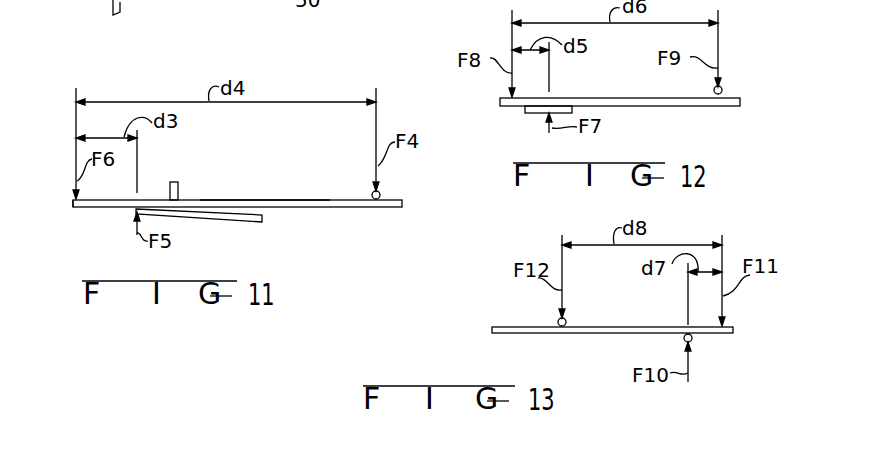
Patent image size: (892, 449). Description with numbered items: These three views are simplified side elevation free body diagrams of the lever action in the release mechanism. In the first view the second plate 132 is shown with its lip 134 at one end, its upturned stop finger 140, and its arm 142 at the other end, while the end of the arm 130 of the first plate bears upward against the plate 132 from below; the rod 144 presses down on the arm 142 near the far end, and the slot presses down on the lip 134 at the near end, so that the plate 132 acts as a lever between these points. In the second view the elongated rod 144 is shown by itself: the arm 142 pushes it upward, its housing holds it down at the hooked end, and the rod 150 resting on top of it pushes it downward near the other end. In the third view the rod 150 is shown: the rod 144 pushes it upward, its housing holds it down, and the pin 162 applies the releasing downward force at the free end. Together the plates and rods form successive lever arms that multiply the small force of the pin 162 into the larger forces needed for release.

In FIG. 11, the arm 130 is at (199, 223).
In FIG. 11, the second plate 132 is at (242, 196).
In FIG. 11, the lip 134 is at (71, 208).
In FIG. 11, the stop finger 140 is at (172, 182).
In FIG. 11, the arm 142 is at (350, 208).
In FIG. 12, the arm 142 is at (532, 113).
In FIG. 11, the elongated rod 144 is at (381, 192).
In FIG. 12, the elongated rod 144 is at (657, 112).
In FIG. 13, the elongated rod 144 is at (692, 339).
In FIG. 12, the elongated rod 150 is at (724, 88).
In FIG. 13, the elongated rod 150 is at (600, 334).
In FIG. 13, the pin 162 is at (558, 320).